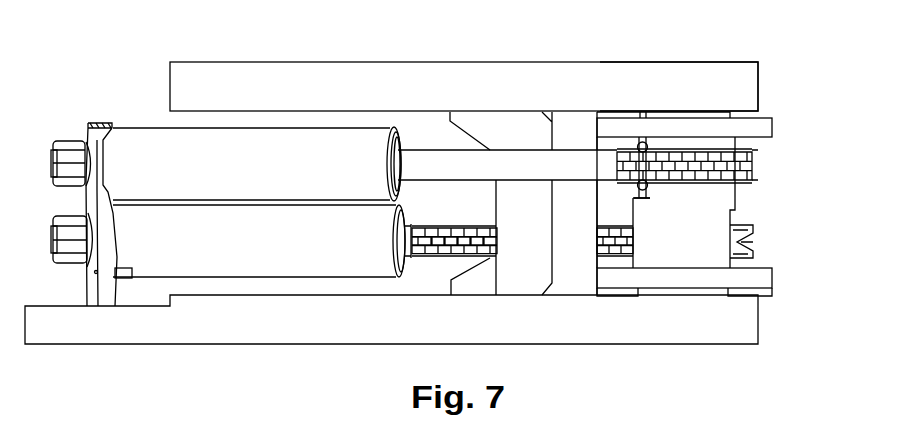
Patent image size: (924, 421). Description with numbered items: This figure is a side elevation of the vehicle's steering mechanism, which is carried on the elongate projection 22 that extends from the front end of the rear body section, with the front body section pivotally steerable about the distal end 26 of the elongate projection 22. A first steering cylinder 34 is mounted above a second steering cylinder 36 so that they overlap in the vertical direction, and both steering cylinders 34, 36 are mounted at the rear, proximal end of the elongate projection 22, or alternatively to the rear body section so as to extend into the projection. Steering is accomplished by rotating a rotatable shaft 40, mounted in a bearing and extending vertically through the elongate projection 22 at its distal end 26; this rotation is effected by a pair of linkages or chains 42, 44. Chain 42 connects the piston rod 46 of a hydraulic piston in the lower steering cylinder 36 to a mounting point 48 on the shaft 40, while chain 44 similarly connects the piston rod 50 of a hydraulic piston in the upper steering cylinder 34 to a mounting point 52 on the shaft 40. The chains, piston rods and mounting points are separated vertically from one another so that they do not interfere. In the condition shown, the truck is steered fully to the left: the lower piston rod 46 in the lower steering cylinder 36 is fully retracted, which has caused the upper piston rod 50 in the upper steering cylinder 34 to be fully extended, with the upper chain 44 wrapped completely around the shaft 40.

The elongate projection 22 is at (265, 87).
The distal end 26 is at (735, 87).
The first steering cylinder 34 is at (154, 143).
The second steering cylinder 36 is at (228, 265).
The rotatable shaft 40 is at (688, 217).
The chain 42 is at (467, 237).
The chain 44 is at (740, 164).
The piston rod 46 is at (407, 247).
The mounting point 48 is at (735, 242).
The piston rod 50 is at (432, 163).
The mounting point 52 is at (644, 145).